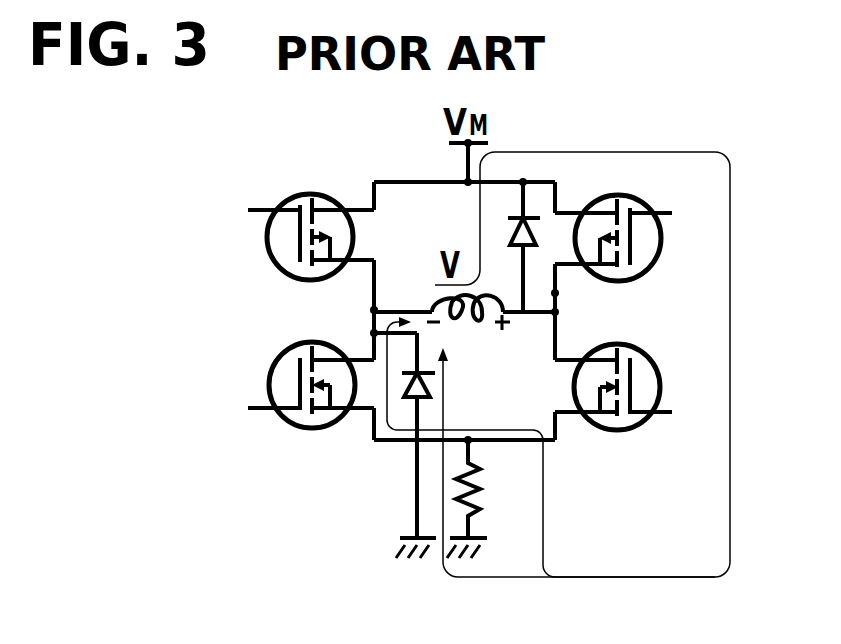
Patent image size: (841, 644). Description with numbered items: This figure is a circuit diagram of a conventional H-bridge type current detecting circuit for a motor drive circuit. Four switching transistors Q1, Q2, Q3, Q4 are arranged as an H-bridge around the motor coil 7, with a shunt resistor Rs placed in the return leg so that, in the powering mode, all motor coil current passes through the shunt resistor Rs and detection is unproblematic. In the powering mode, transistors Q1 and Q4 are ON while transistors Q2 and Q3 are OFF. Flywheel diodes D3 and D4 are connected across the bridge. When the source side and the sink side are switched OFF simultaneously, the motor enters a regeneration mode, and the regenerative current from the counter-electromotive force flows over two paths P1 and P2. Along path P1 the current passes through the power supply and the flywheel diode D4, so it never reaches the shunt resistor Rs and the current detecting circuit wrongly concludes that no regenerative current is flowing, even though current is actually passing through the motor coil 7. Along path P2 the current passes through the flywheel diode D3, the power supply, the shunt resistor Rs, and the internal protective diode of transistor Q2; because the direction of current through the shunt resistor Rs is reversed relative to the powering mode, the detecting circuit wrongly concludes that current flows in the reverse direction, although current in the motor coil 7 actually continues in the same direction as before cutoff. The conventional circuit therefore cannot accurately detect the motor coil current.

The transistor Q1 is at (294, 228).
The transistor Q2 is at (295, 374).
The transistor Q3 is at (636, 228).
The transistor Q4 is at (635, 375).
The flywheel diode D3 is at (512, 232).
The flywheel diode D4 is at (430, 383).
The motor coil 7 is at (483, 318).
The shunt resistor Rs is at (488, 499).
The path P1 is at (440, 523).
The path P2 is at (543, 540).